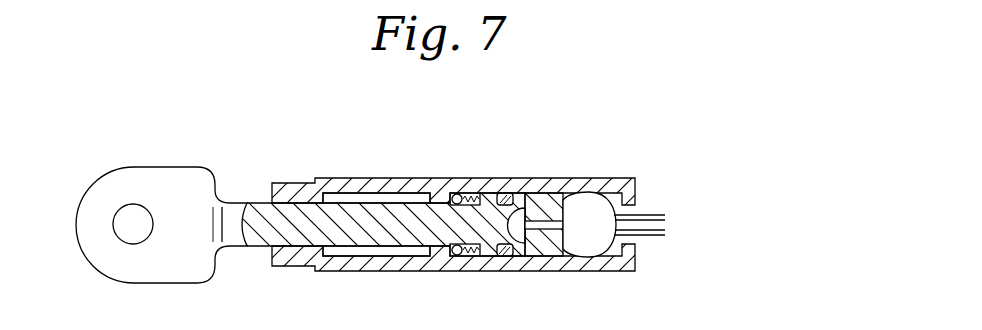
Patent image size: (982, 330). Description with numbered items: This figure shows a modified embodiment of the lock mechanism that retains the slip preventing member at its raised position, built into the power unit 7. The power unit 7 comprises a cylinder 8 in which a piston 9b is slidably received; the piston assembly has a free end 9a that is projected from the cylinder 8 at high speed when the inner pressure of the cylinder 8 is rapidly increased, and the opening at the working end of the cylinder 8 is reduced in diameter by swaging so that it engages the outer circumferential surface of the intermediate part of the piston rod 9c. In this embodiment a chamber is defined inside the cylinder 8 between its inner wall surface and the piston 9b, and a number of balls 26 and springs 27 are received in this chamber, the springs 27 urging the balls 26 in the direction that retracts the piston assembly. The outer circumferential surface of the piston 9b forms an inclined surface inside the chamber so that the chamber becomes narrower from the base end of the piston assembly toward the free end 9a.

The power unit 7 is at (553, 143).
The cylinder 8 is at (412, 182).
The free end 9a is at (193, 177).
The piston 9b is at (465, 222).
The piston rod 9c is at (350, 205).
The balls 26 is at (457, 193).
The springs 27 is at (467, 257).